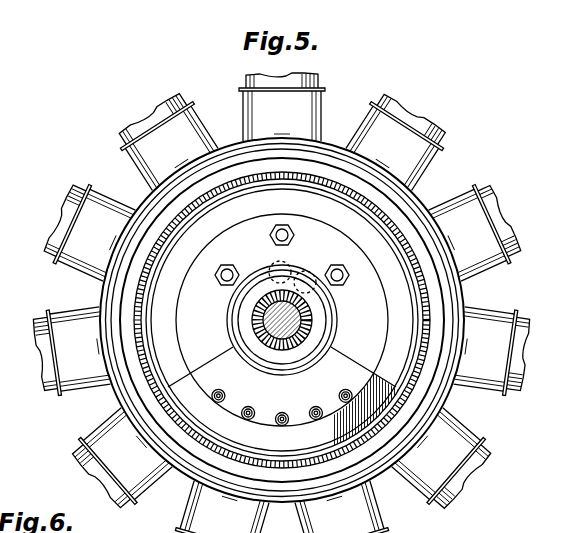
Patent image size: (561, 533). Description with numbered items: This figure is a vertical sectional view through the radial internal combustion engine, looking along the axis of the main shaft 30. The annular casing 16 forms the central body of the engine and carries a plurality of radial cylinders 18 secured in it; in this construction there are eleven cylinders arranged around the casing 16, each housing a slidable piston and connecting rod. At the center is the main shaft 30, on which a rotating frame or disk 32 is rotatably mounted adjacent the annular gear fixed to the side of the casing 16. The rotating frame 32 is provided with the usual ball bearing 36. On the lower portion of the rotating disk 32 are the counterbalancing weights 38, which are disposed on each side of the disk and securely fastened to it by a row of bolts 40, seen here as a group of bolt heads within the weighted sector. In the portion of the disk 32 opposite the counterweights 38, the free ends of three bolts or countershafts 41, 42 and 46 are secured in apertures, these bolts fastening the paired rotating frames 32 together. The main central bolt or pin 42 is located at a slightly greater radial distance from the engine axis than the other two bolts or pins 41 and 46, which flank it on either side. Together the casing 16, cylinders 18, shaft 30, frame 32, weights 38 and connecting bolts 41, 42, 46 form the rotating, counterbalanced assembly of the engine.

The casing 16 is at (340, 143).
The radial cylinders 18 is at (281, 303).
The main shaft 30 is at (290, 322).
The rotating frame 32 is at (300, 315).
The ball bearing 36 is at (272, 272).
The counterbalancing weights 38 is at (294, 384).
The bolts 40 is at (225, 394).
The bolt or countershaft 41 is at (223, 283).
The main central bolt or pin 42 is at (293, 238).
The bolt or countershaft 46 is at (342, 268).